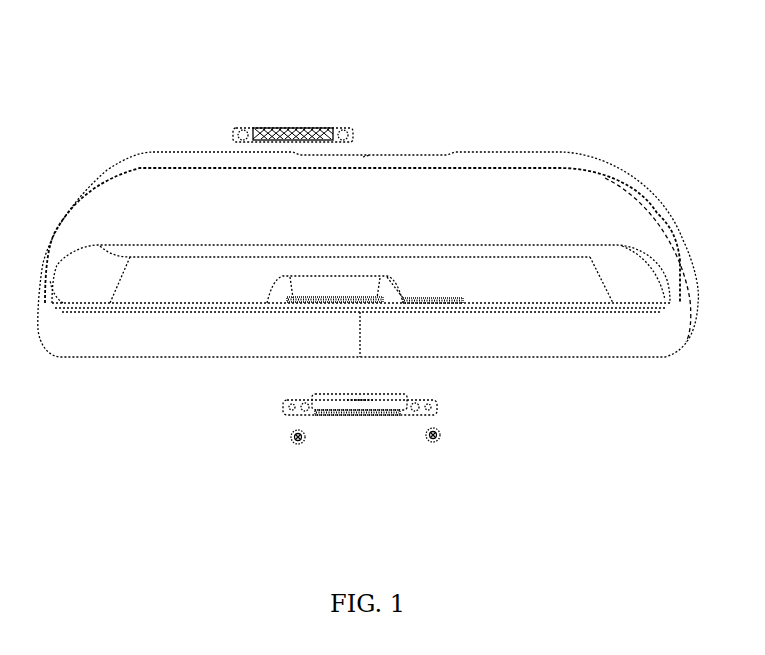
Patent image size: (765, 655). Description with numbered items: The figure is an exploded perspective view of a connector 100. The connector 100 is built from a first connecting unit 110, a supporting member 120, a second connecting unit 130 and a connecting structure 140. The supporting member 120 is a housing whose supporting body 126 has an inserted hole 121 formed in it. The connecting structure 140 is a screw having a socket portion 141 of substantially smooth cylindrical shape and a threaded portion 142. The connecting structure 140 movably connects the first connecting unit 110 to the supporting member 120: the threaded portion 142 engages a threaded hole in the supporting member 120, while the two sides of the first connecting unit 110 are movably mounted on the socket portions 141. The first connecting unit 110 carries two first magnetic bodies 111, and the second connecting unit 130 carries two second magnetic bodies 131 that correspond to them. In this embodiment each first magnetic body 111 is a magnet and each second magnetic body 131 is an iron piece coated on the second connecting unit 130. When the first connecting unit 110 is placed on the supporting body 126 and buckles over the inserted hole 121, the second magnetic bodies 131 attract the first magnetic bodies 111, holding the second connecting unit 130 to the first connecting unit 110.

The connector 100 is at (128, 100).
The first connecting unit 110 is at (320, 413).
The first magnetic body 111 is at (335, 405).
The supporting member 120 is at (567, 162).
The inserted hole 121 is at (343, 298).
The supporting body 126 is at (132, 218).
The second connecting unit 130 is at (335, 128).
The second magnetic body 131 is at (323, 128).
The connecting structure 140 is at (600, 402).
The socket portion 141 is at (445, 435).
The threaded portion 142 is at (435, 428).